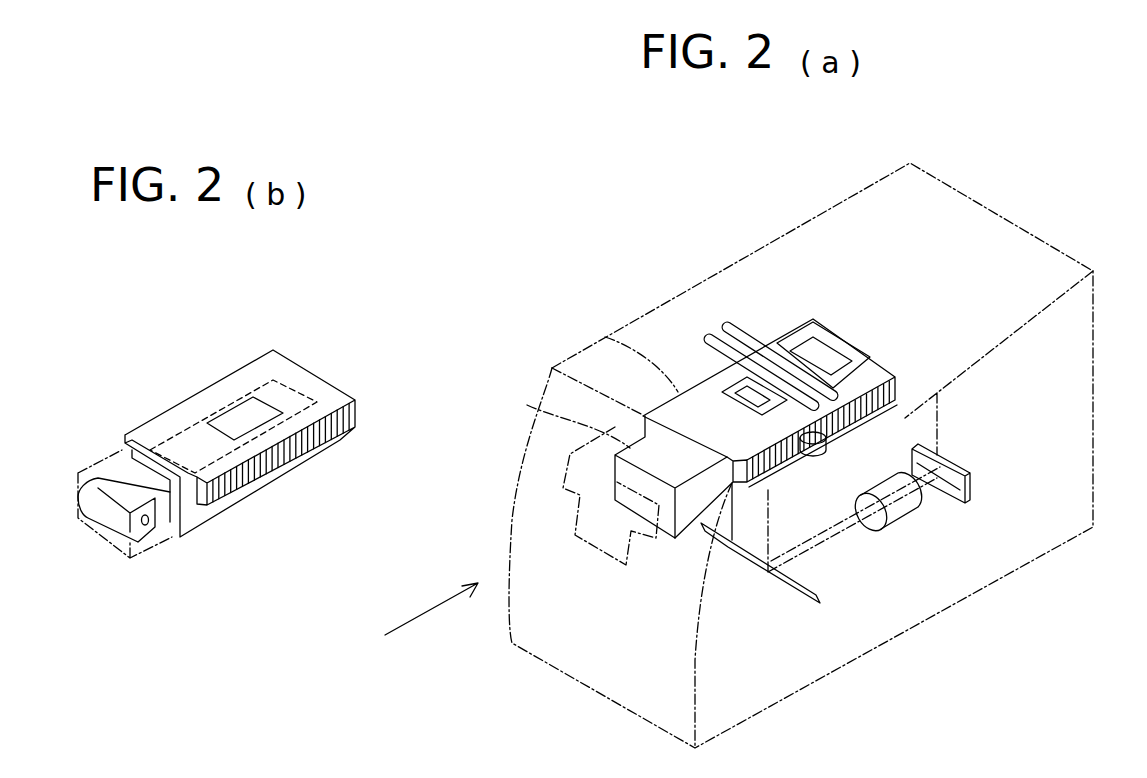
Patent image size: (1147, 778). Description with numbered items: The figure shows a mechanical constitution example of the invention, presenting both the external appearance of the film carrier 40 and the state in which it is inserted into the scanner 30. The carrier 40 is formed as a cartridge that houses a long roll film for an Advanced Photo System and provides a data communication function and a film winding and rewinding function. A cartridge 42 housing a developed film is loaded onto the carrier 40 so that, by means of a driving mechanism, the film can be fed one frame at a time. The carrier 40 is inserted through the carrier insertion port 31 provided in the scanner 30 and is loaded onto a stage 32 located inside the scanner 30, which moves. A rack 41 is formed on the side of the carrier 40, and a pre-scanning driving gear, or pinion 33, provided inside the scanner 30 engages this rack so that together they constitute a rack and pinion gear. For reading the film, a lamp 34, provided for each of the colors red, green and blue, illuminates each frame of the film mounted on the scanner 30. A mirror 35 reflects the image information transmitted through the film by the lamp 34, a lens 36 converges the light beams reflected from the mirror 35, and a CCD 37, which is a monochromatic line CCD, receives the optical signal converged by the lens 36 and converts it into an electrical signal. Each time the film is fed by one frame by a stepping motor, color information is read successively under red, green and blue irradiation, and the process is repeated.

In FIG. 2A, the scanner 30 is at (1052, 250).
In FIG. 2A, the carrier insertion port 31 is at (577, 508).
In FIG. 2A, the stage 32 is at (603, 338).
In FIG. 2A, the pre-scanning driving gear (pinion) 33 is at (815, 455).
In FIG. 2A, the lamp 34 is at (725, 335).
In FIG. 2A, the mirror 35 is at (804, 600).
In FIG. 2A, the lens 36 is at (903, 524).
In FIG. 2A, the CCD 37 is at (968, 507).
In FIG. 2A, the film carrier 40 is at (612, 445).
In FIG. 2B, the film carrier 40 is at (187, 407).
In FIG. 2A, the rack 41 is at (897, 388).
In FIG. 2B, the rack 41 is at (244, 485).
In FIG. 2B, the cartridge 42 is at (157, 530).